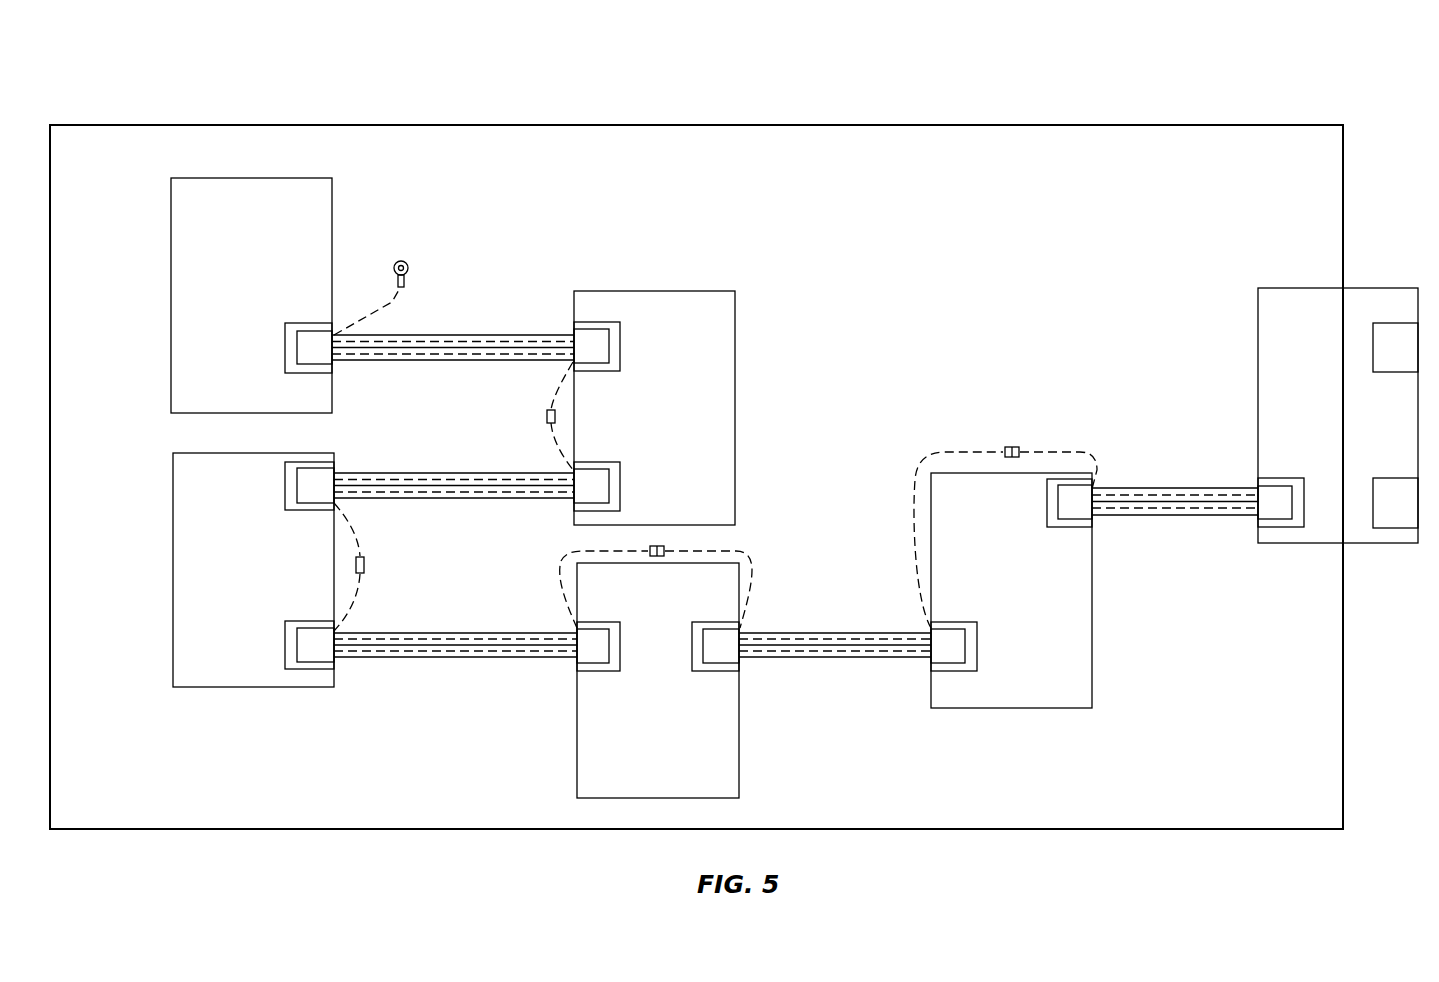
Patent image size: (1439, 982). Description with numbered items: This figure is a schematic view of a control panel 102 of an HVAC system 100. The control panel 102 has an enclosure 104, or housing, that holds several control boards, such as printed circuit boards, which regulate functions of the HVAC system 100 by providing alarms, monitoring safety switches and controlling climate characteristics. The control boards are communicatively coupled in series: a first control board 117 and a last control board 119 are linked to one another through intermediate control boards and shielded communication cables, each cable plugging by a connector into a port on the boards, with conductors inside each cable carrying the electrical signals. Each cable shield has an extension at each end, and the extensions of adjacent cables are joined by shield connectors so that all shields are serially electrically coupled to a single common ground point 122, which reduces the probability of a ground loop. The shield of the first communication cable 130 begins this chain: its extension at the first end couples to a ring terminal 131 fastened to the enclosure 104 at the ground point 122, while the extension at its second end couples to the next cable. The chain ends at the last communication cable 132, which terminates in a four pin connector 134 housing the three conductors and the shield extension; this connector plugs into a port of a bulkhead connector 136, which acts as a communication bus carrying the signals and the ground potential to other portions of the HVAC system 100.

The HVAC system 100 is at (1058, 68).
The control panel 102 is at (1135, 96).
The enclosure 104 is at (697, 125).
The first control board 117 is at (252, 178).
The last control board 119 is at (1092, 608).
The ground point 122 is at (398, 279).
The first communication cable 130 is at (453, 345).
The ring terminal 131 is at (409, 265).
The last communication cable 132 is at (1175, 499).
The four pin connector 134 is at (1276, 527).
The bulkhead connector 136 is at (1312, 288).